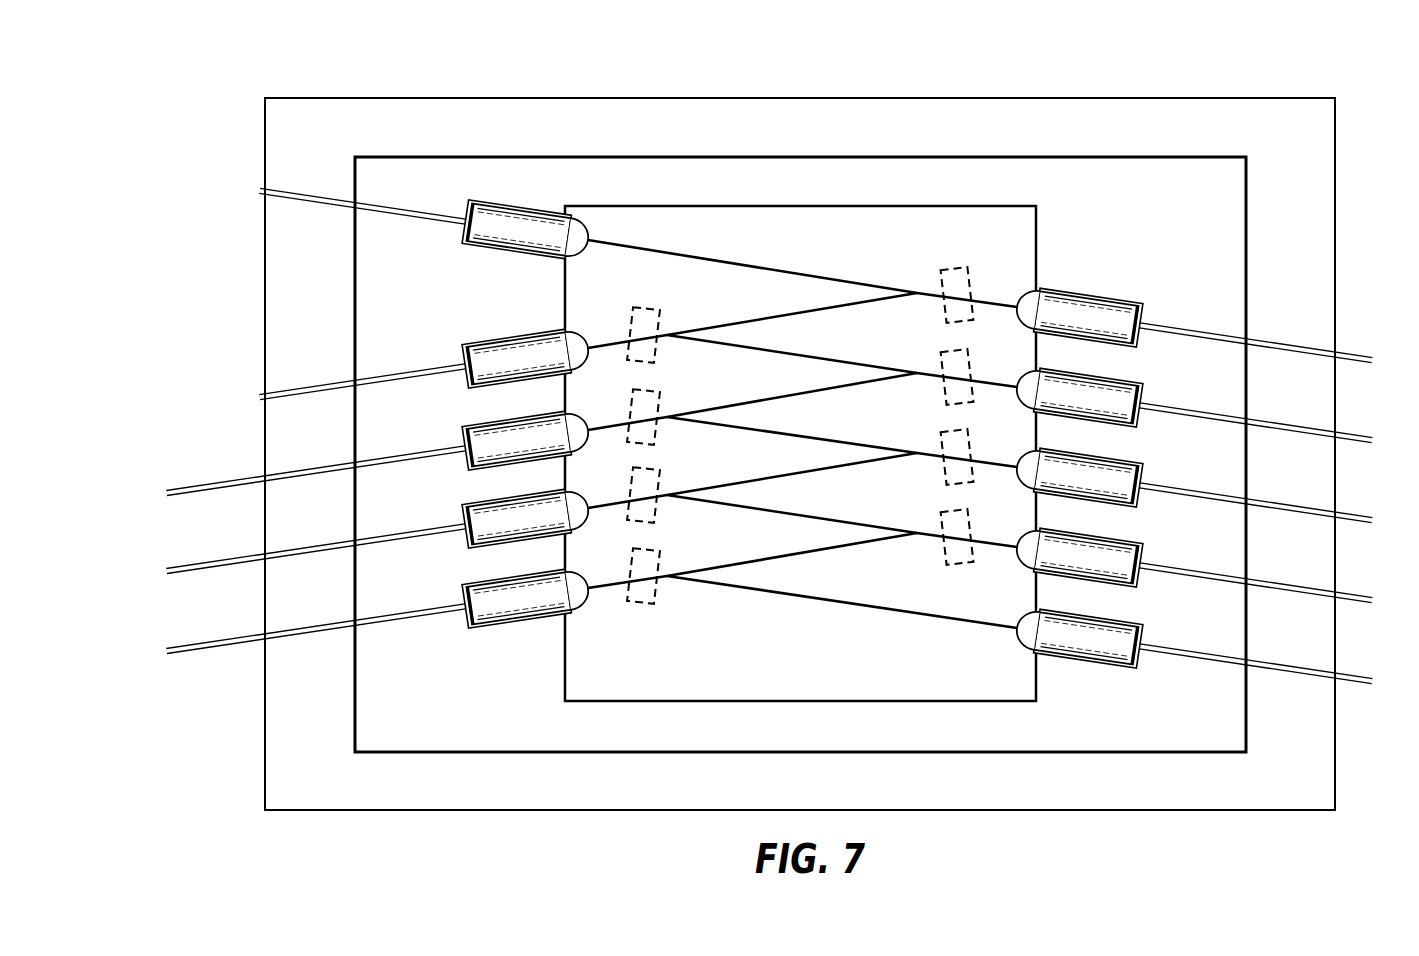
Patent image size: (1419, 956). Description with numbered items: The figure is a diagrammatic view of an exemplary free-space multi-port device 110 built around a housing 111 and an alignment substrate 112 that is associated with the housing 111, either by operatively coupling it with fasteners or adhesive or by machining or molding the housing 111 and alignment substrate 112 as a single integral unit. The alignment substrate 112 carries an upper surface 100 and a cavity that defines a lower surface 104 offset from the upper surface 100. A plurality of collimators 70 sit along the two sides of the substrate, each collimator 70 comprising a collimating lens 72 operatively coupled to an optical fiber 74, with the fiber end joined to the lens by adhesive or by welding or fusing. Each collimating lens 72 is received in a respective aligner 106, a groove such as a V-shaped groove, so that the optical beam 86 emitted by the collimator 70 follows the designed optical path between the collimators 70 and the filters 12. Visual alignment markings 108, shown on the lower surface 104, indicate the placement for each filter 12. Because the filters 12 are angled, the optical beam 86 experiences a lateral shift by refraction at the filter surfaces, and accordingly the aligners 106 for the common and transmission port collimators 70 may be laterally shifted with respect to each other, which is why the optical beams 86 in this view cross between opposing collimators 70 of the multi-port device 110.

The filter 12 is at (632, 350).
The collimator 70 is at (552, 603).
The collimating lens 72 is at (547, 345).
The optical fiber 74 is at (383, 210).
The optical beam 86 is at (782, 270).
The upper surface 100 is at (569, 739).
The lower surface 104 is at (607, 682).
The aligner 106 is at (476, 201).
The visual alignment marking 108 is at (660, 308).
The free-space multi-port device 110 is at (1167, 37).
The housing 111 is at (1251, 98).
The alignment substrate 112 is at (1040, 157).